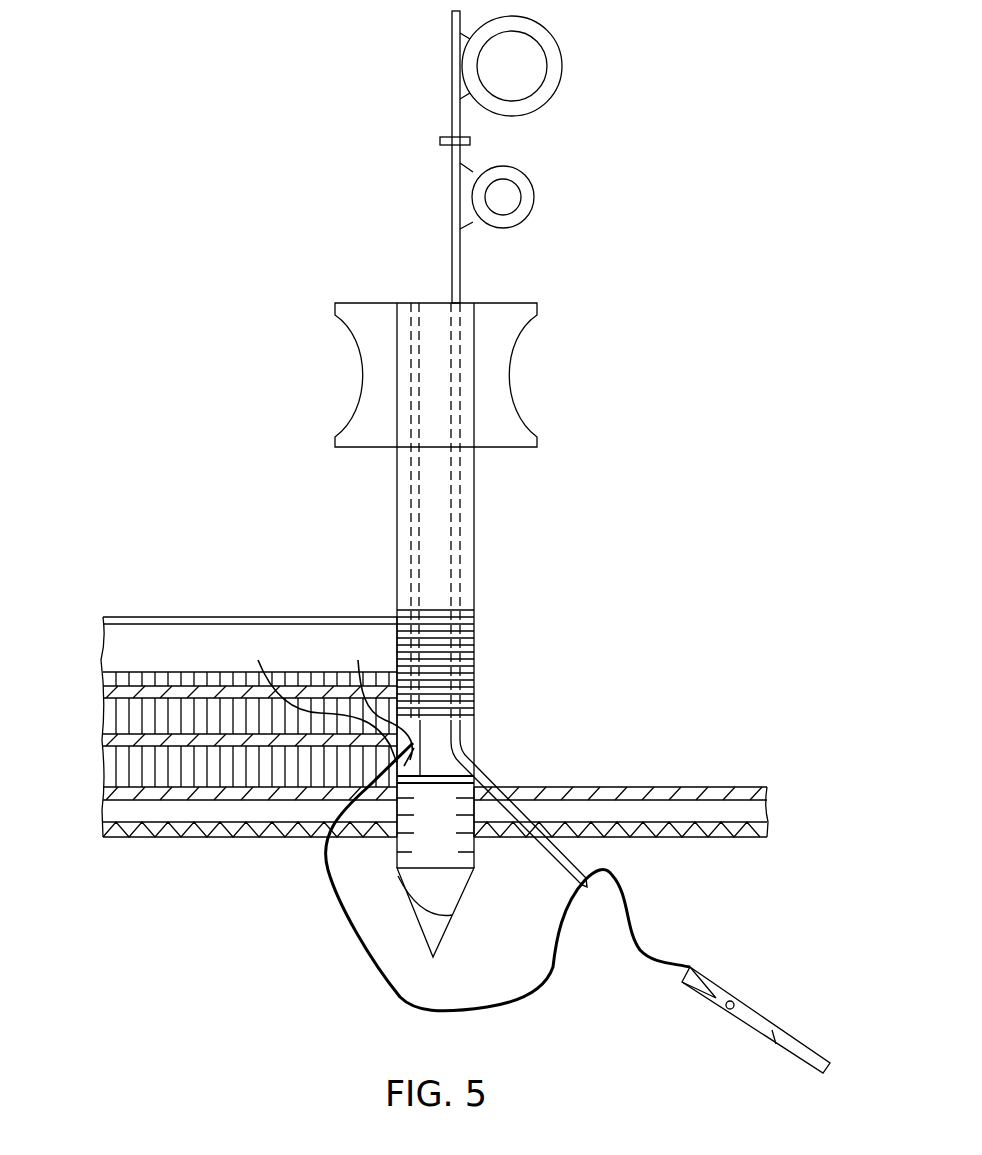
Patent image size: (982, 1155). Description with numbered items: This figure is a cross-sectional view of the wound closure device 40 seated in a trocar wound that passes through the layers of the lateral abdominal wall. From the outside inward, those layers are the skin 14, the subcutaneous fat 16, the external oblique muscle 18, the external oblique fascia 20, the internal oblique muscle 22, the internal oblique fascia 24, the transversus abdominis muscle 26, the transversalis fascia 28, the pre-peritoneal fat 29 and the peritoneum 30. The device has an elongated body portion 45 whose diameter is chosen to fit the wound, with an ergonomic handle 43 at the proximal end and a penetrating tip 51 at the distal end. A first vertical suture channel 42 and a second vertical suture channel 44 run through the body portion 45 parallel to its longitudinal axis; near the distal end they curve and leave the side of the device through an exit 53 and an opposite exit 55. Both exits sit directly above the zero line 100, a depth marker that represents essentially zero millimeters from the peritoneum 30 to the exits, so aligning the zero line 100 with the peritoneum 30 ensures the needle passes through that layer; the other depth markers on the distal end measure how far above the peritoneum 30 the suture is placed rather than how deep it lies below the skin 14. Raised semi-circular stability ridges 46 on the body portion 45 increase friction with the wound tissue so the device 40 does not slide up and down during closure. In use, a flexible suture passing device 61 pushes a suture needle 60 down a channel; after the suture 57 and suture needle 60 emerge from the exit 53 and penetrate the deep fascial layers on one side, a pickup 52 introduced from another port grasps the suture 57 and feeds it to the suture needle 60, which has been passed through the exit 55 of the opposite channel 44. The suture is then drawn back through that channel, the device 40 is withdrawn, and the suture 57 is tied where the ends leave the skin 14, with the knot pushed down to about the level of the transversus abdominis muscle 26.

The skin 14 is at (165, 617).
The subcutaneous fat 16 is at (115, 640).
The external oblique muscle 18 is at (107, 677).
The external oblique fascia 20 is at (112, 692).
The internal oblique muscle 22 is at (115, 715).
The internal oblique fascia 24 is at (115, 738).
The transversus abdominis muscle 26 is at (112, 762).
The transversalis fascia 28 is at (113, 790).
The pre-peritoneal fat 29 is at (110, 813).
The peritoneum 30 is at (132, 830).
The wound closure device 40 is at (371, 285).
The first vertical suture channel 42 is at (413, 547).
The ergonomic handle 43 is at (517, 410).
The second vertical suture channel 44 is at (457, 548).
The body portion 45 is at (474, 577).
The stability ridges 46 is at (476, 657).
The penetrating tip 51 is at (447, 933).
The pickup 52 is at (797, 1040).
The exit 53 is at (319, 697).
The exit 55 is at (477, 755).
The suture 57 is at (380, 977).
The suture needle 60 is at (500, 780).
The flexible suture passing device 61 is at (566, 68).
The zero line 100 is at (377, 699).